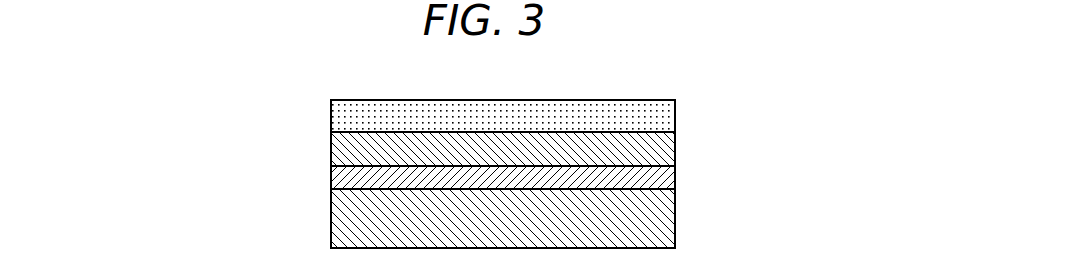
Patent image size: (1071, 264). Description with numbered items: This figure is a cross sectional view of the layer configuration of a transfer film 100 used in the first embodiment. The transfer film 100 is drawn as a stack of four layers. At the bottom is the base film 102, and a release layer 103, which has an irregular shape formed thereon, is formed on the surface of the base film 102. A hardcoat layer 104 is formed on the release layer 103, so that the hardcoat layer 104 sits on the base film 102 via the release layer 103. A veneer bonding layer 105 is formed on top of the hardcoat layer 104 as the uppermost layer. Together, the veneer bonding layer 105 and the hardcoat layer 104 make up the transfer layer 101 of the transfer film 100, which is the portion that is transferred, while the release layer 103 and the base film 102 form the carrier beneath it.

The transfer film 100 is at (210, 100).
The transfer layer 101 is at (311, 102).
The base film 102 is at (675, 222).
The release layer 103 is at (675, 180).
The hardcoat layer 104 is at (675, 150).
The veneer bonding layer 105 is at (675, 110).